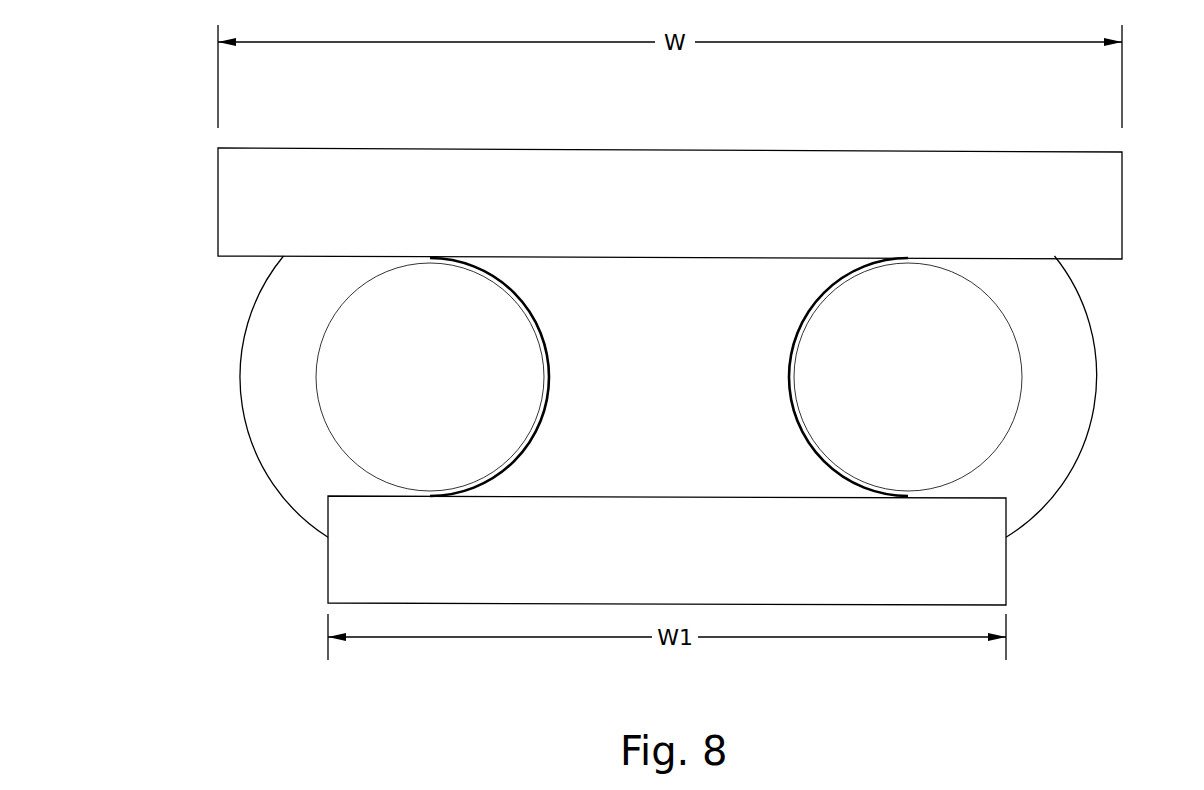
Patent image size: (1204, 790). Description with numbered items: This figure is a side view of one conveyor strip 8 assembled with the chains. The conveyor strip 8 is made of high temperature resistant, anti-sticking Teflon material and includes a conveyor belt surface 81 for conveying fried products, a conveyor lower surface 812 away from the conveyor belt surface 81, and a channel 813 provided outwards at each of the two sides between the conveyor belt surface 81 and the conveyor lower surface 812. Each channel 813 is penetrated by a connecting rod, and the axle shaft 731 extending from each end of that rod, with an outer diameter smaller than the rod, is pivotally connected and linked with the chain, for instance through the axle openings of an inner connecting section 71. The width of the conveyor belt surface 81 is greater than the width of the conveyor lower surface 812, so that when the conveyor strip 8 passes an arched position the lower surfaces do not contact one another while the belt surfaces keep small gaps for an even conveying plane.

The conveyor strip 8 is at (670, 341).
The conveyor belt surface 81 is at (605, 148).
The conveyor lower surface 812 is at (600, 604).
The channel 813 is at (476, 263).
The inner connecting section 71 is at (1063, 435).
The axle shaft 731 is at (346, 357).